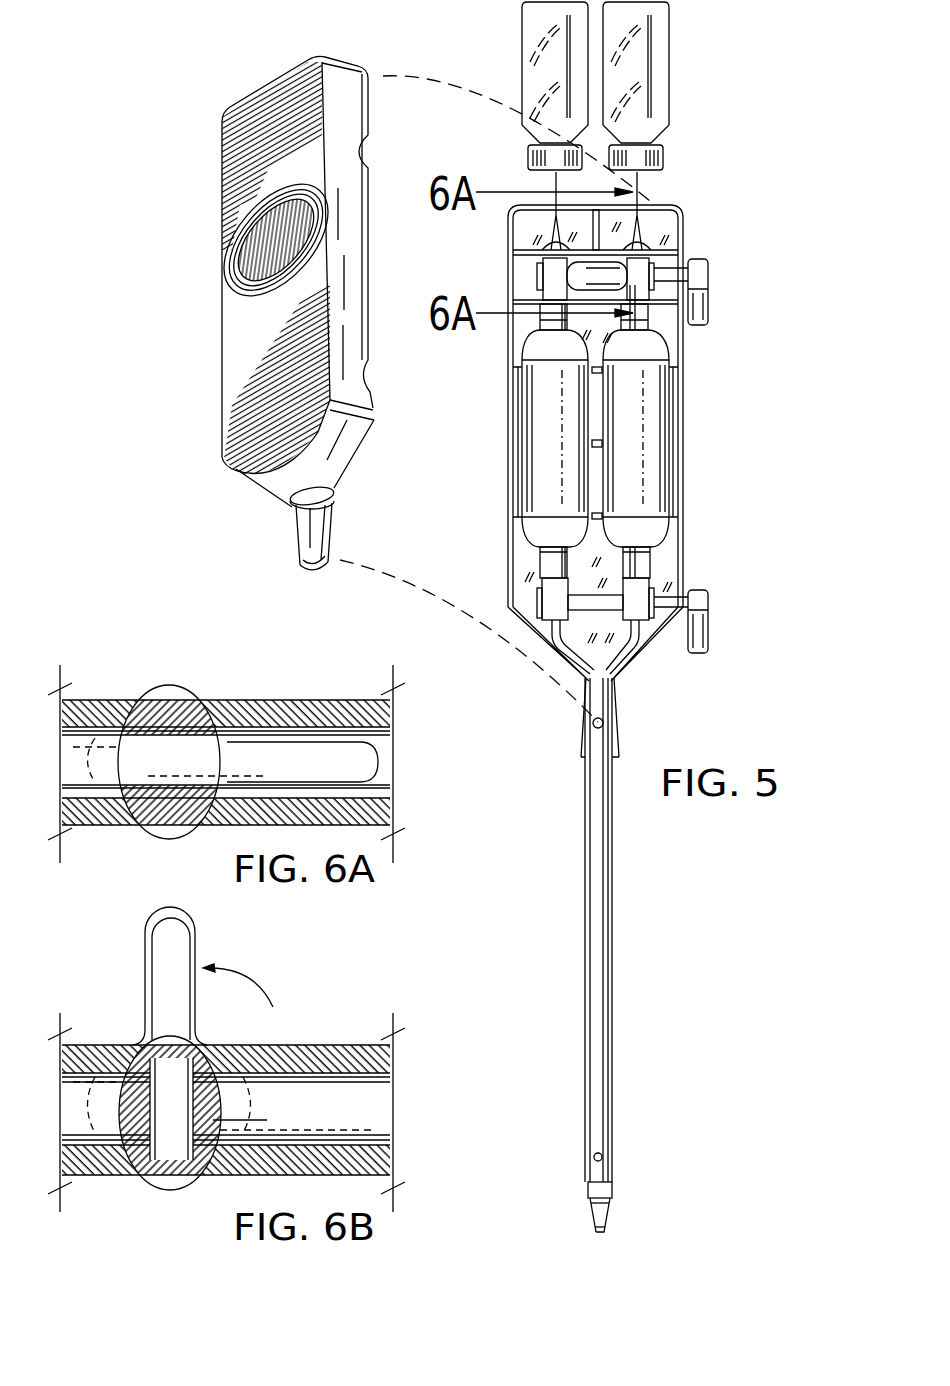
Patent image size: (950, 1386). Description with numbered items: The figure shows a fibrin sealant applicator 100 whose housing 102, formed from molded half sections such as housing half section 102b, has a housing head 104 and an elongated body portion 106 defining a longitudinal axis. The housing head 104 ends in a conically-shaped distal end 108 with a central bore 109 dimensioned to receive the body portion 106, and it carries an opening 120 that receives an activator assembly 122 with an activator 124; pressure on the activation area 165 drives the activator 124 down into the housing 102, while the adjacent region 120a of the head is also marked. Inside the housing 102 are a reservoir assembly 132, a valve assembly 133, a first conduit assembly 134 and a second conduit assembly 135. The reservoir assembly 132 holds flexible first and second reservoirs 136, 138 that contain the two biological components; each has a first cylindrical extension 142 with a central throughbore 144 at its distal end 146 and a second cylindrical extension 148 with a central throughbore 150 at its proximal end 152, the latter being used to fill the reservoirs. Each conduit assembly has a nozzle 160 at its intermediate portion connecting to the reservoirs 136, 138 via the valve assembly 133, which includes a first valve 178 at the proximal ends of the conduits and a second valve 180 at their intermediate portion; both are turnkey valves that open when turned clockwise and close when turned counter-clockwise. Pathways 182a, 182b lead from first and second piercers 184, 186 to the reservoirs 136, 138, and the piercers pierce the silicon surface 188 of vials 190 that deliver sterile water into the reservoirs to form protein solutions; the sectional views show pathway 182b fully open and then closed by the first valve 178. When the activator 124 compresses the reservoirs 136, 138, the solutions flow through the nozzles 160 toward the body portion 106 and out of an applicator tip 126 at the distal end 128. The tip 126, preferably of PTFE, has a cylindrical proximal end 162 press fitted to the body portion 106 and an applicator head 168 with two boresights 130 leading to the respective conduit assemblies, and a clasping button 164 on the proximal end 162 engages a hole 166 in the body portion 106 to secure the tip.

In FIG. 5, the applicator 100 is at (318, 25).
In FIG. 5, the housing 102 is at (234, 83).
In FIG. 5, the housing half section 102b is at (683, 568).
In FIG. 5, the housing head 104 is at (343, 77).
In FIG. 5, the elongated body portion 106 is at (599, 879).
In FIG. 5, the conically-shaped distal end 108 is at (619, 718).
In FIG. 5, the bore 109 is at (317, 563).
In FIG. 5, the opening 120 is at (243, 293).
In FIG. 5, the handle lower portion 120a is at (230, 447).
In FIG. 5, the activator assembly 122 is at (205, 259).
In FIG. 5, the activator 124 is at (303, 232).
In FIG. 5, the applicator tip 126 is at (607, 1204).
In FIG. 5, the distal end 128 is at (610, 1181).
In FIG. 5, the boresights 130 is at (590, 1224).
In FIG. 5, the reservoir assembly 132 is at (701, 415).
In FIG. 5, the valve assembly 133 is at (716, 268).
In FIG. 5, the first conduit assembly 134 is at (526, 592).
In FIG. 5, the second conduit assembly 135 is at (688, 208).
In FIG. 5, the first reservoir 136 is at (552, 425).
In FIG. 5, the second reservoir 138 is at (652, 473).
In FIG. 5, the first cylindrical extension 142 is at (640, 563).
In FIG. 5, the central throughbore 144 is at (655, 594).
In FIG. 5, the distal end 146 is at (540, 552).
In FIG. 5, the second cylindrical extension 148 is at (640, 318).
In FIG. 5, the central throughbore 150 is at (540, 298).
In FIG. 5, the proximal end 152 is at (541, 331).
In FIG. 5, the nozzle 160 is at (556, 626).
In FIG. 5, the cylindrical proximal end 162 is at (589, 1188).
In FIG. 5, the clasping button 164 is at (603, 1148).
In FIG. 5, the activation area 165 is at (248, 218).
In FIG. 5, the hole 166 is at (594, 1155).
In FIG. 5, the applicator head 168 is at (589, 1204).
In FIG. 5, the first valve 178 is at (709, 301).
In FIG. 6A, the first valve 178 is at (162, 686).
In FIG. 6B, the first valve 178 is at (196, 925).
In FIG. 5, the second valve 180 is at (709, 633).
In FIG. 5, the pathway 182a is at (553, 270).
In FIG. 5, the pathway 182b is at (655, 262).
In FIG. 6A, the pathway 182b is at (307, 700).
In FIG. 6B, the pathway 182b is at (317, 1046).
In FIG. 5, the first piercer 184 is at (556, 240).
In FIG. 5, the second piercer 186 is at (649, 227).
In FIG. 5, the silicon surface 188 is at (530, 140).
In FIG. 5, the vials 190 is at (672, 67).